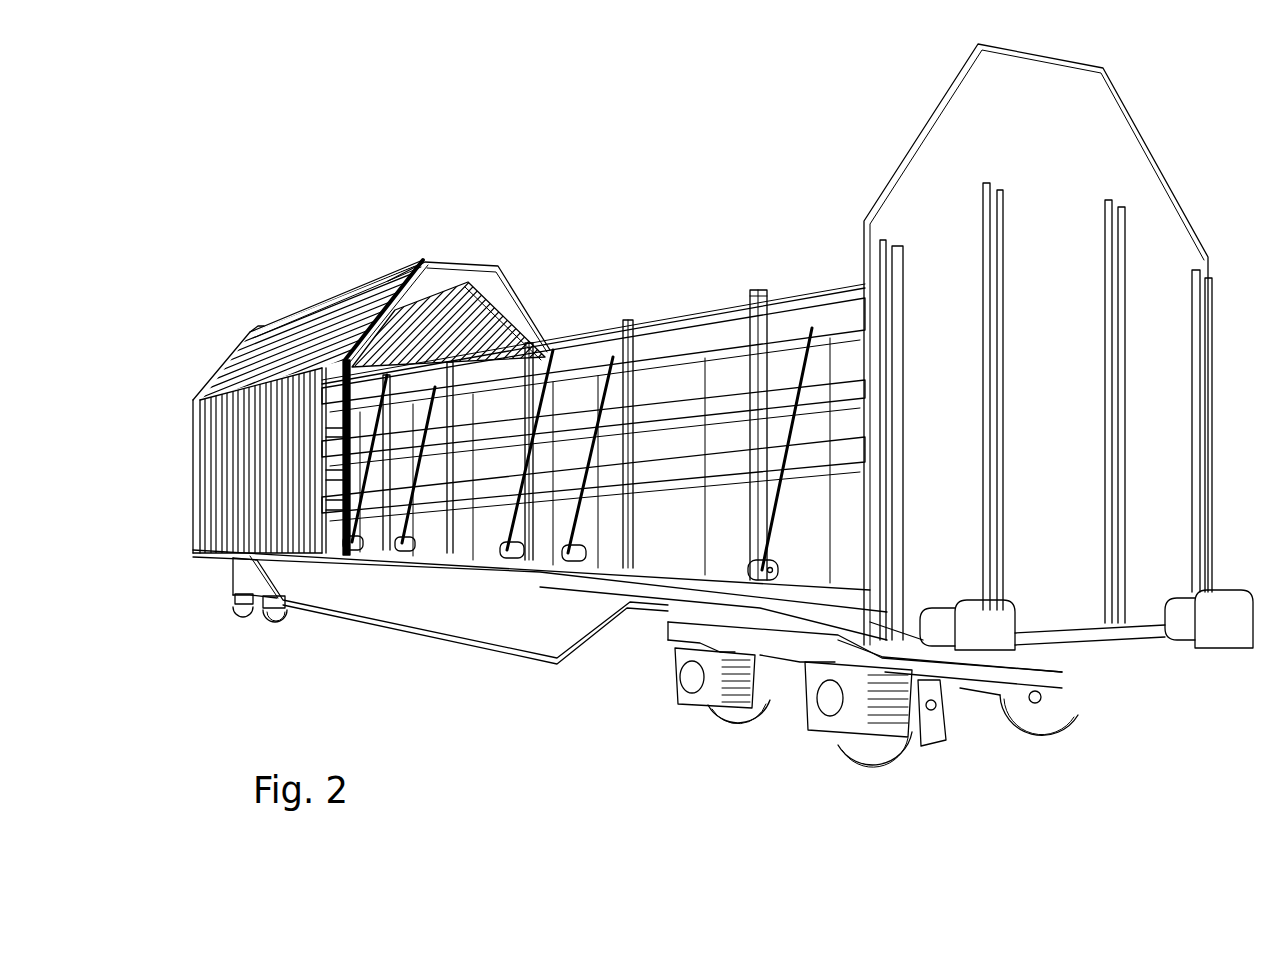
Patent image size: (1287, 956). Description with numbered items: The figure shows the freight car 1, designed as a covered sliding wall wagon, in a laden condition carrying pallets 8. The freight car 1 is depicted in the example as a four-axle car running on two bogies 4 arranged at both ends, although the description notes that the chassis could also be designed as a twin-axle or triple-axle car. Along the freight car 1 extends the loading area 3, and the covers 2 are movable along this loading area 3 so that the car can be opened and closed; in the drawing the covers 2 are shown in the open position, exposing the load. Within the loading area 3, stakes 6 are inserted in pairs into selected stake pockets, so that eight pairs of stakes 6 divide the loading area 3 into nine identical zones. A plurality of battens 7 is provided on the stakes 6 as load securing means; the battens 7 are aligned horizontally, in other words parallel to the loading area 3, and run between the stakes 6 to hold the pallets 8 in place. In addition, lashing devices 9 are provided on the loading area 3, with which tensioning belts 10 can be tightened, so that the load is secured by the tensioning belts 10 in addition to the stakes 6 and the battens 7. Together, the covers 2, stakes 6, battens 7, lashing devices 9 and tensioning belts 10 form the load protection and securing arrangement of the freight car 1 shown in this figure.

The freight car 1 is at (288, 180).
The covers 2 is at (250, 336).
The loading area 3 is at (660, 583).
The bogies 4 is at (250, 620).
The stakes 6 is at (755, 303).
The battens 7 is at (650, 350).
The pallets 8 is at (663, 390).
The lashing devices 9 is at (513, 556).
The tensioning belts 10 is at (602, 400).